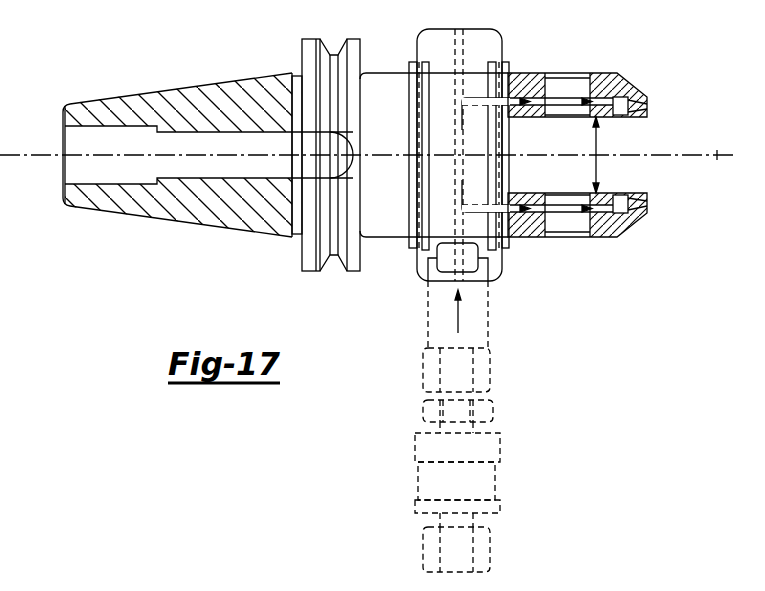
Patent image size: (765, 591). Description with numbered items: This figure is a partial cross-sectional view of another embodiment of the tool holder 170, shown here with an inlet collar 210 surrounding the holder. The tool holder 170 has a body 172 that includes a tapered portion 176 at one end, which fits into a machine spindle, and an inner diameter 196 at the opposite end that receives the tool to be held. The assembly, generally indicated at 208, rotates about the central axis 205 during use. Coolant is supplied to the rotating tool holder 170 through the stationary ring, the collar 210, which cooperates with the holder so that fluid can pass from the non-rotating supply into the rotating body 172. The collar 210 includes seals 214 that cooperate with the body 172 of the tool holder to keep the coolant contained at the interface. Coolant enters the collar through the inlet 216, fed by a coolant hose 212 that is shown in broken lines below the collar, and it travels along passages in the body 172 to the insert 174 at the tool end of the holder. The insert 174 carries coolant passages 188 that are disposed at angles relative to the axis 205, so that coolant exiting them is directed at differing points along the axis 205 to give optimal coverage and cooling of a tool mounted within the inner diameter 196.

The tool holder 208 is at (270, 135).
The tapered portion 176 is at (188, 92).
The body 172 is at (387, 58).
The inlet collar 210 is at (478, 38).
The seals 214 is at (412, 249).
The tool holder 170 is at (602, 76).
The insert 174 is at (648, 101).
The coolant passages 188 is at (648, 206).
The inner diameter 196 is at (594, 146).
The central axis 205 is at (716, 160).
The inlet 216 is at (439, 296).
The coolant hose 212 is at (490, 372).